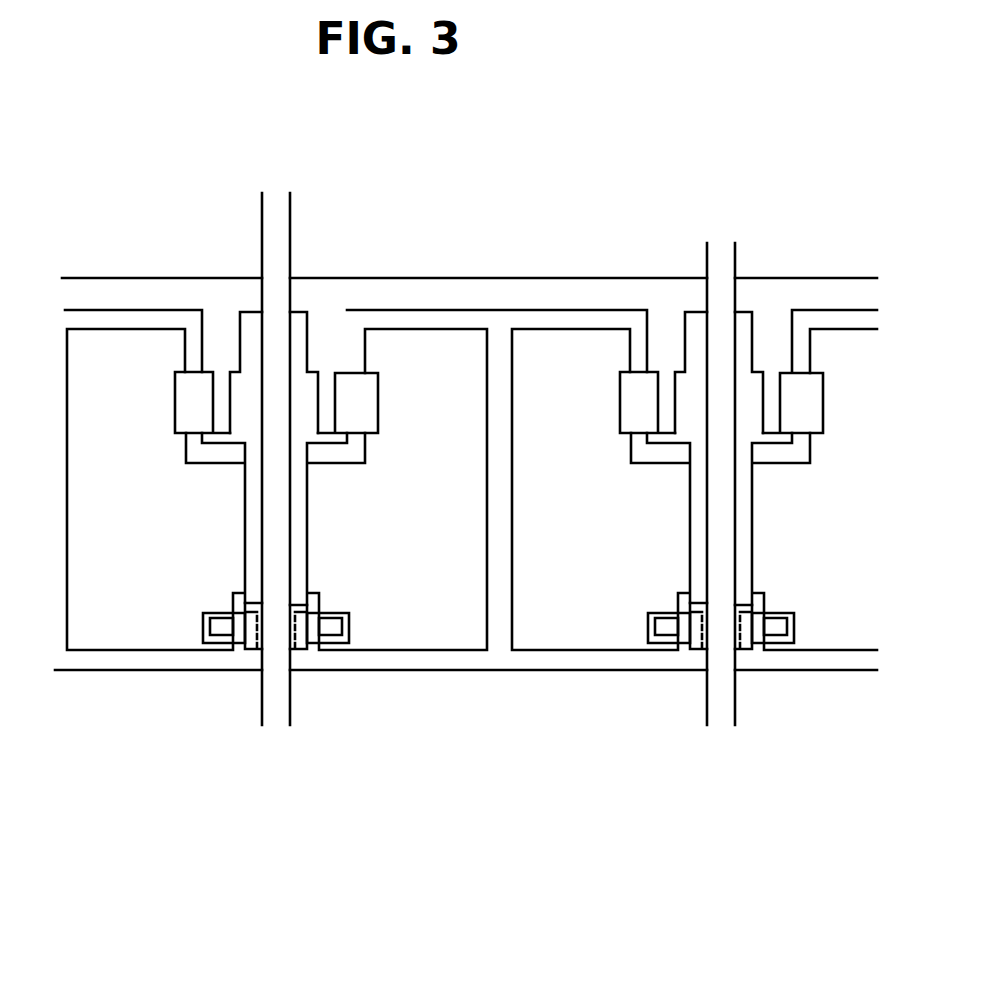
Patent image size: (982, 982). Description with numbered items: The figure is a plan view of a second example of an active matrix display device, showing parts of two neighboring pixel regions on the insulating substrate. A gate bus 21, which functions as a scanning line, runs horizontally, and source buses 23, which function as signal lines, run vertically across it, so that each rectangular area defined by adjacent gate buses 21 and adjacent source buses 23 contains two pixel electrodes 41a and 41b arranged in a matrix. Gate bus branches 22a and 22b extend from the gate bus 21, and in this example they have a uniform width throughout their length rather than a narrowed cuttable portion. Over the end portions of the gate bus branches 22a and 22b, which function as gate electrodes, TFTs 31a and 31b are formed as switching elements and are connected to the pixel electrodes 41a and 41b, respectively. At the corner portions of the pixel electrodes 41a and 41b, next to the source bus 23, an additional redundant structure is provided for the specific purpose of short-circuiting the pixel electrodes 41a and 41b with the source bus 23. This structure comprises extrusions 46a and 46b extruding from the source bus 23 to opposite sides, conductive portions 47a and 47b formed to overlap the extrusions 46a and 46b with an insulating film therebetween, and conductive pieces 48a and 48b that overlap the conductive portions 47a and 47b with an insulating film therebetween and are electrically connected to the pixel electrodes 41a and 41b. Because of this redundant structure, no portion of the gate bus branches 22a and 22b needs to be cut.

The gate bus 21 is at (425, 292).
The gate bus branch 22a is at (220, 333).
The gate bus branch 22b is at (334, 332).
The source bus 23 is at (282, 258).
The TFT 31a is at (222, 408).
The TFT 31b is at (327, 412).
The pixel electrode 41a is at (170, 568).
The pixel electrode 41b is at (420, 556).
The extrusion 46a is at (257, 648).
The extrusion 46b is at (296, 645).
The conductive portion 47a is at (241, 652).
The conductive portion 47b is at (312, 652).
The conductive piece 48a is at (222, 636).
The conductive piece 48b is at (338, 628).